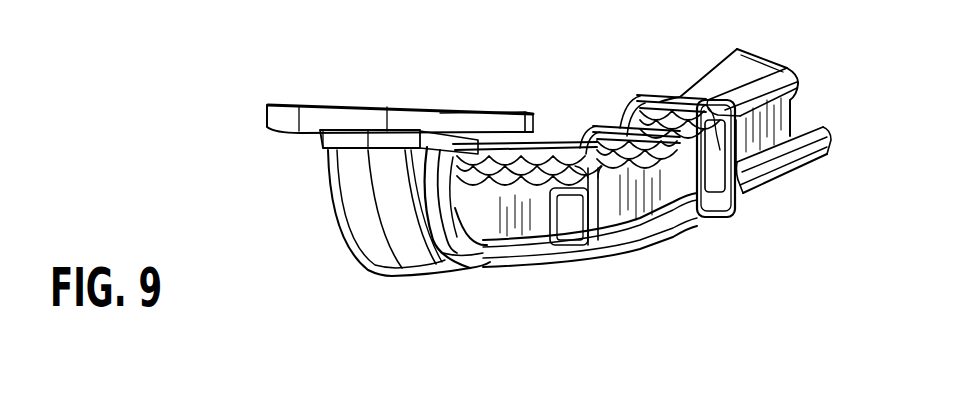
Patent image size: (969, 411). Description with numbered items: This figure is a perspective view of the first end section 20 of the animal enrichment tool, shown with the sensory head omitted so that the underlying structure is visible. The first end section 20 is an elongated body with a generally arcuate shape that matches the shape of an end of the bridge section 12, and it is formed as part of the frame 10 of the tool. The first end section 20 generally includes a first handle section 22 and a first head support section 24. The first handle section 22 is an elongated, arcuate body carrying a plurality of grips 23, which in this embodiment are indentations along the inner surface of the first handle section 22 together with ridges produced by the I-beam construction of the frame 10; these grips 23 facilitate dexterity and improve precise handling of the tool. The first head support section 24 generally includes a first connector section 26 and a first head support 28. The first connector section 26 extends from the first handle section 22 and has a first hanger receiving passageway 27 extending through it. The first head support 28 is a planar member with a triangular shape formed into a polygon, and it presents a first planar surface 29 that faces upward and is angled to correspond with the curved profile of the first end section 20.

The frame 10 is at (707, 72).
The bridge section 12 is at (773, 182).
The first end section 20 is at (652, 250).
The first handle section 22 is at (525, 268).
The grips 23 is at (563, 147).
The first head support section 24 is at (448, 112).
The first connector section 26 is at (360, 233).
The first hanger receiving passageway 27 is at (483, 247).
The first head support 28 is at (300, 134).
The first planar surface 29 is at (292, 103).